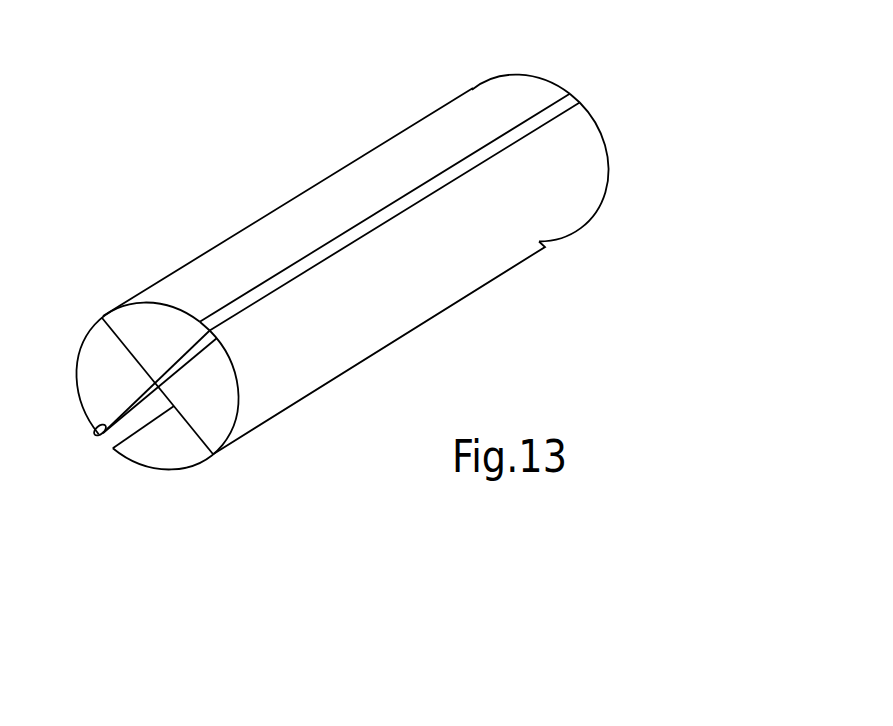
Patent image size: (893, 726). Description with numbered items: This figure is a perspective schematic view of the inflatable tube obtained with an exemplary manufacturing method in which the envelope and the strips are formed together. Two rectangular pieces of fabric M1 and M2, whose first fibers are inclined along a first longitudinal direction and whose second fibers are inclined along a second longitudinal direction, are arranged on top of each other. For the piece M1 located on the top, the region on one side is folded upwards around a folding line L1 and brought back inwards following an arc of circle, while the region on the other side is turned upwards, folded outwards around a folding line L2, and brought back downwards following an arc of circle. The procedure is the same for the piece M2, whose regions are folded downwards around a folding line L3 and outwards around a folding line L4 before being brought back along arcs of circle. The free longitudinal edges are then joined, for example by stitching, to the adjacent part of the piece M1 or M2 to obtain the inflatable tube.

The piece of fabric M1 is at (165, 300).
The piece of fabric M2 is at (155, 457).
The folding line L1 is at (106, 316).
The folding line L2 is at (211, 330).
The folding line L3 is at (213, 456).
The folding line L4 is at (94, 433).